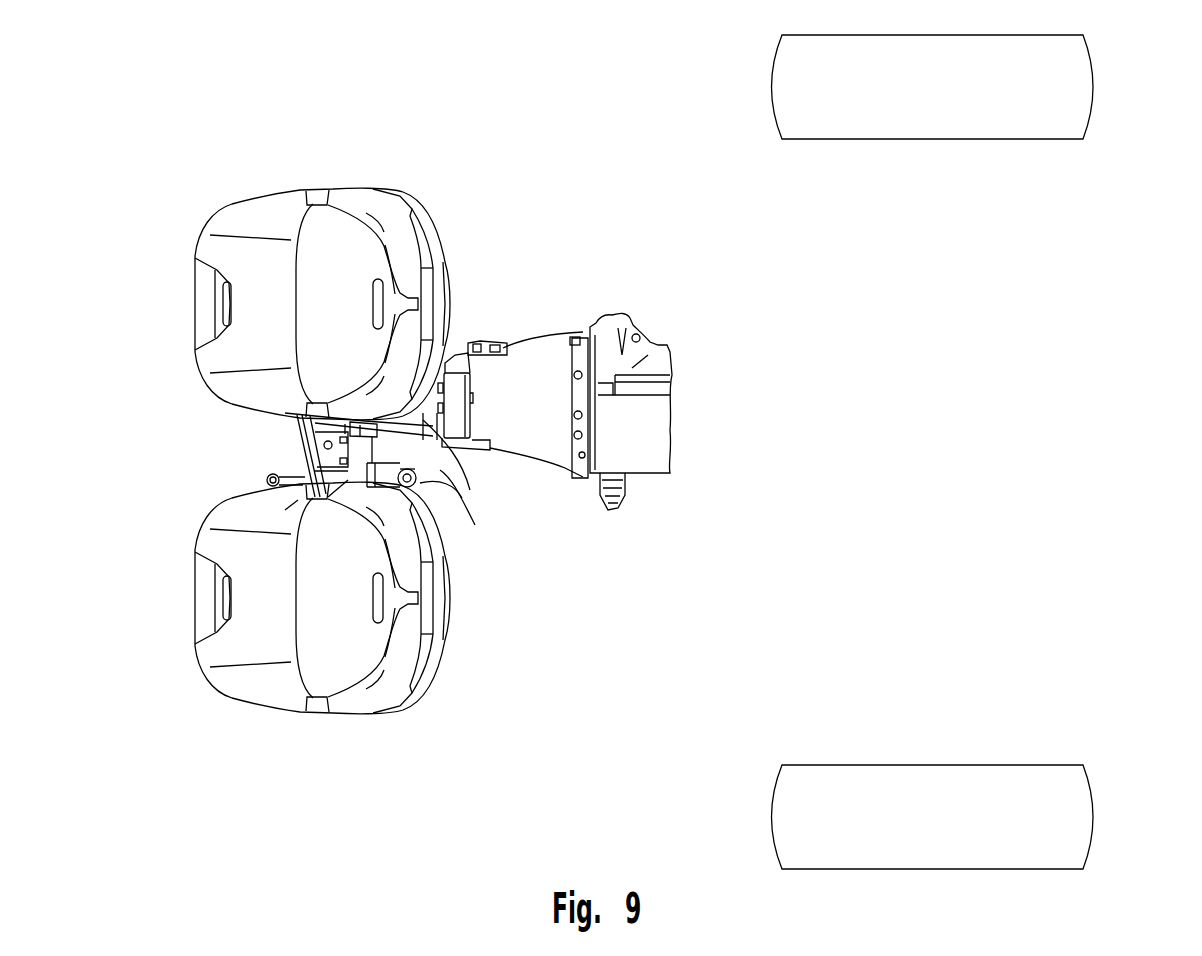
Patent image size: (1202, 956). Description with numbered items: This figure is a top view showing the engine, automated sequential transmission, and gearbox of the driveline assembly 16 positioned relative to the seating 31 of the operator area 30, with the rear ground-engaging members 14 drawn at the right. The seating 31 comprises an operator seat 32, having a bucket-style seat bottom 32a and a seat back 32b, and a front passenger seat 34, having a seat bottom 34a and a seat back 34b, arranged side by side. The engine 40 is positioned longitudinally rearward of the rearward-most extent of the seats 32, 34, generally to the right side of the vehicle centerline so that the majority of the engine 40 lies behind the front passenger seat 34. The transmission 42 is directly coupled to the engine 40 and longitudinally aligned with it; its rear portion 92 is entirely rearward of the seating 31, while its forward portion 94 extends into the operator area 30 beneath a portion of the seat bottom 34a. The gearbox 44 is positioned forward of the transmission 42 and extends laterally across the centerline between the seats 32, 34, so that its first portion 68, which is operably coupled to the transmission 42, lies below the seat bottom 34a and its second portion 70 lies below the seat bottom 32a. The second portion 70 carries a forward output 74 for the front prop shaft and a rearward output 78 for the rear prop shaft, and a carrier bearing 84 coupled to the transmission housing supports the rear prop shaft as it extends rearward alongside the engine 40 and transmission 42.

The rear ground-engaging members 14 is at (1078, 88).
The driveline assembly 16 is at (762, 452).
The operator area 30 is at (183, 123).
The seating 31 is at (360, 160).
The operator seat 32 is at (173, 622).
The seat bottom 32a is at (272, 688).
The seat back 32b is at (365, 638).
The front passenger seat 34 is at (173, 273).
The seat bottom 34a is at (272, 195).
The seat back 34b is at (365, 258).
The engine 40 is at (660, 326).
The transmission 42 is at (487, 340).
The gearbox 44 is at (298, 453).
The first portion 68 is at (297, 433).
The second portion 70 is at (298, 507).
The forward output 74 is at (267, 480).
The rearward output 78 is at (440, 487).
The carrier bearing 84 is at (605, 505).
The rear portion 92 is at (546, 360).
The forward portion 94 is at (440, 463).